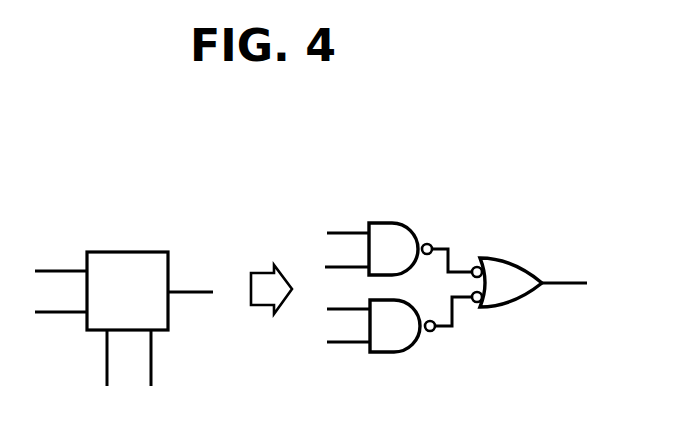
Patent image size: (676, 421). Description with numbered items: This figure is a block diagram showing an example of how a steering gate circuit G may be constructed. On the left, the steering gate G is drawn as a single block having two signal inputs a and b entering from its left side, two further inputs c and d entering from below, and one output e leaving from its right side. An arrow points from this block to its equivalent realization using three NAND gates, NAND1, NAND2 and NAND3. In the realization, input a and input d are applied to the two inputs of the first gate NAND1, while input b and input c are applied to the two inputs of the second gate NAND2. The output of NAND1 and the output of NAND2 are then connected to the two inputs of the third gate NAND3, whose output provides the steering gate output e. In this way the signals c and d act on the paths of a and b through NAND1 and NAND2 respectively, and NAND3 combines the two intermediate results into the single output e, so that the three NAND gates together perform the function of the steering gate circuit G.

The steering gate circuit G is at (127, 291).
The input signal a is at (202, 237).
The input signal b is at (202, 314).
The input signal c is at (226, 358).
The input signal d is at (260, 324).
The output signal e is at (377, 272).
The first NAND gate NAND1 is at (420, 232).
The second NAND gate NAND2 is at (421, 341).
The third NAND gate NAND3 is at (524, 266).